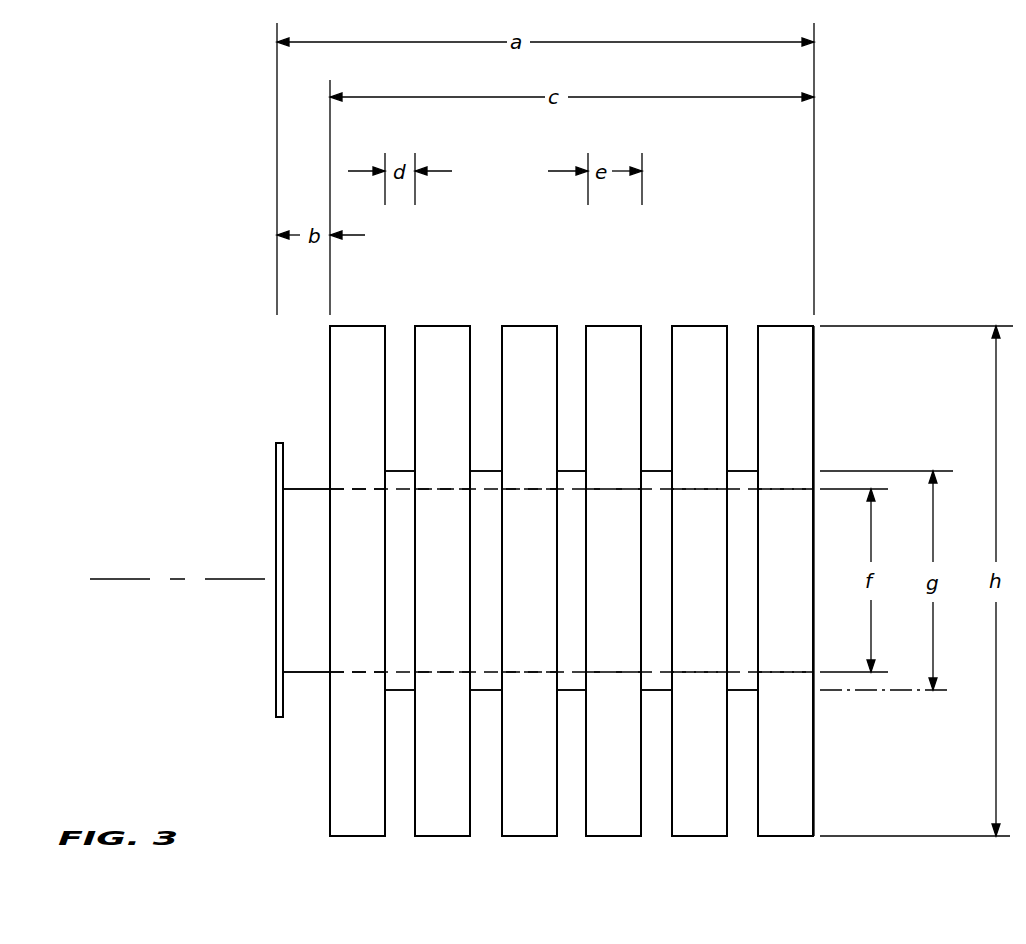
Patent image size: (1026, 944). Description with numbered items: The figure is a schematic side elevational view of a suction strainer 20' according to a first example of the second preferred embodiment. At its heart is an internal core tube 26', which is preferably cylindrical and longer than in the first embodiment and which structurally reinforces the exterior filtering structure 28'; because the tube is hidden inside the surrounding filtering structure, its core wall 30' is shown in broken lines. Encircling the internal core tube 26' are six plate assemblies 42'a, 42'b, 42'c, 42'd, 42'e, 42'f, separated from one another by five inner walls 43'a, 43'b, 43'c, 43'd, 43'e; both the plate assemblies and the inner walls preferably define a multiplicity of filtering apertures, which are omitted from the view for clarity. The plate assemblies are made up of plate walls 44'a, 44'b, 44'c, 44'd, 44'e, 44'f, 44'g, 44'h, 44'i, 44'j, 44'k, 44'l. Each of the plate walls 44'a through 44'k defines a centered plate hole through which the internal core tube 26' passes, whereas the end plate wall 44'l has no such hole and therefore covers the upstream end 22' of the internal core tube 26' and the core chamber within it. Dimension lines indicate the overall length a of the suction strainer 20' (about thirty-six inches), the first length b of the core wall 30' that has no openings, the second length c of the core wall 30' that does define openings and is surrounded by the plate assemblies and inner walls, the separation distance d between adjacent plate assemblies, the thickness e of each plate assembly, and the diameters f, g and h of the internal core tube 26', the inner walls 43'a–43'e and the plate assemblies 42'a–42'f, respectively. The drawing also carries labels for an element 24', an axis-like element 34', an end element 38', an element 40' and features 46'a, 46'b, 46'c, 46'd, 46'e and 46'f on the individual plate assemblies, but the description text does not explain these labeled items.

The suction strainer 20' is at (193, 504).
The upstream end 22' is at (890, 527).
The shaft end 24' is at (207, 596).
The internal core tube 26' is at (584, 596).
The exterior filtering structure 28' is at (834, 250).
The core wall 30' is at (554, 600).
The axis 34' is at (177, 546).
The flange 38' is at (241, 580).
The bottom end 40' is at (810, 864).
The plate assembly 42'a is at (357, 547).
The plate assembly 42'b is at (442, 547).
The plate assembly 42'c is at (529, 547).
The plate assembly 42'd is at (613, 547).
The plate assembly 42'e is at (699, 547).
The plate assembly 42'f is at (785, 547).
The inner wall 43'a is at (401, 489).
The inner wall 43'b is at (488, 489).
The inner wall 43'c is at (574, 489).
The inner wall 43'd is at (663, 489).
The inner wall 43'e is at (748, 489).
The plate wall 44'a is at (276, 581).
The plate wall 44'b is at (362, 598).
The plate wall 44'c is at (430, 617).
The plate wall 44'd is at (448, 598).
The plate wall 44'e is at (518, 617).
The plate wall 44'f is at (538, 598).
The plate wall 44'g is at (601, 617).
The plate wall 44'h is at (618, 598).
The plate wall 44'i is at (684, 617).
The plate wall 44'j is at (707, 598).
The plate wall 44'k is at (774, 617).
The plate wall 44'l is at (855, 581).
The bore 46'a is at (357, 580).
The bore 46'b is at (442, 580).
The bore 46'c is at (529, 580).
The bore 46'd is at (613, 580).
The bore 46'e is at (699, 580).
The bore 46'f is at (785, 580).